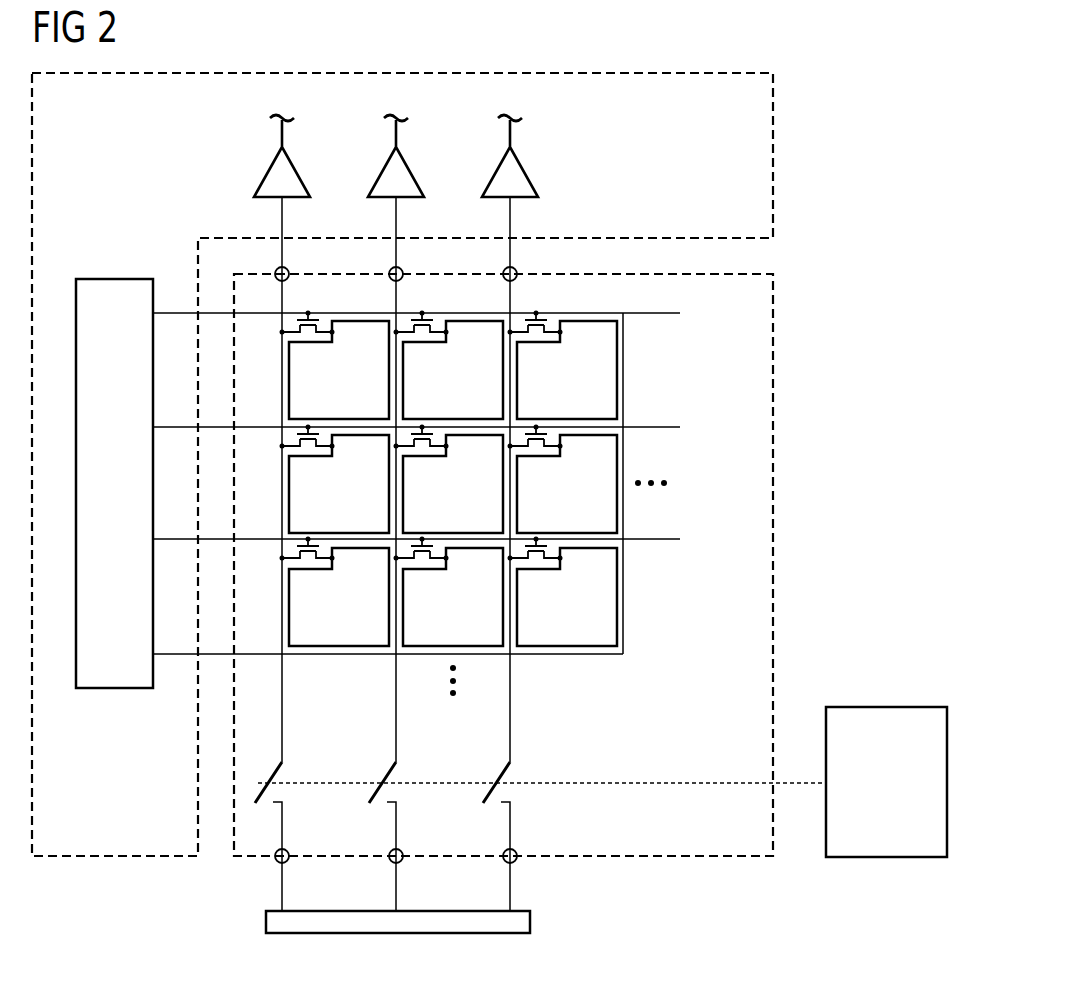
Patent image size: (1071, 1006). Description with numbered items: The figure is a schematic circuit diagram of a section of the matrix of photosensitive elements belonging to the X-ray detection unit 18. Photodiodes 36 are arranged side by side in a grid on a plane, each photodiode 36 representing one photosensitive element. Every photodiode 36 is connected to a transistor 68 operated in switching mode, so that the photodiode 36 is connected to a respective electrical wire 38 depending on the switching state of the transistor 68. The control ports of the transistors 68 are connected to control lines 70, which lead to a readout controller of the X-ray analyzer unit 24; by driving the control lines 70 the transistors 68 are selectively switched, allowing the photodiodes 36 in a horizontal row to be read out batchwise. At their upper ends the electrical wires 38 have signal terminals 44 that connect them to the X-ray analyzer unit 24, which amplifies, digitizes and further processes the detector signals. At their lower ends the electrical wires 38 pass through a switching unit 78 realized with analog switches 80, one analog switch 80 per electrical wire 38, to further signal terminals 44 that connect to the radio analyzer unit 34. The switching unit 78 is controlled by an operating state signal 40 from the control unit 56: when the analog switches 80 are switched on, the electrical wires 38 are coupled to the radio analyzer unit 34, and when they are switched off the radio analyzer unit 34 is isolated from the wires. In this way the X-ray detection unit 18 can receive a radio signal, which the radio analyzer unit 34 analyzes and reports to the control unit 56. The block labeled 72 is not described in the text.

The X-ray detection unit 18 is at (755, 323).
The X-ray analyzer unit 24 is at (753, 172).
The radio analyzer unit 34 is at (266, 922).
The photodiode 36 is at (353, 392).
The electrical wire 38 is at (283, 718).
The operating state signal 40 is at (798, 787).
The signal terminal 44 is at (288, 270).
The control unit 56 is at (900, 800).
The transistor 68 is at (309, 311).
The control line 70 is at (664, 315).
The row driver 72 is at (128, 502).
The switching unit 78 is at (260, 780).
The analog switch 80 is at (264, 796).